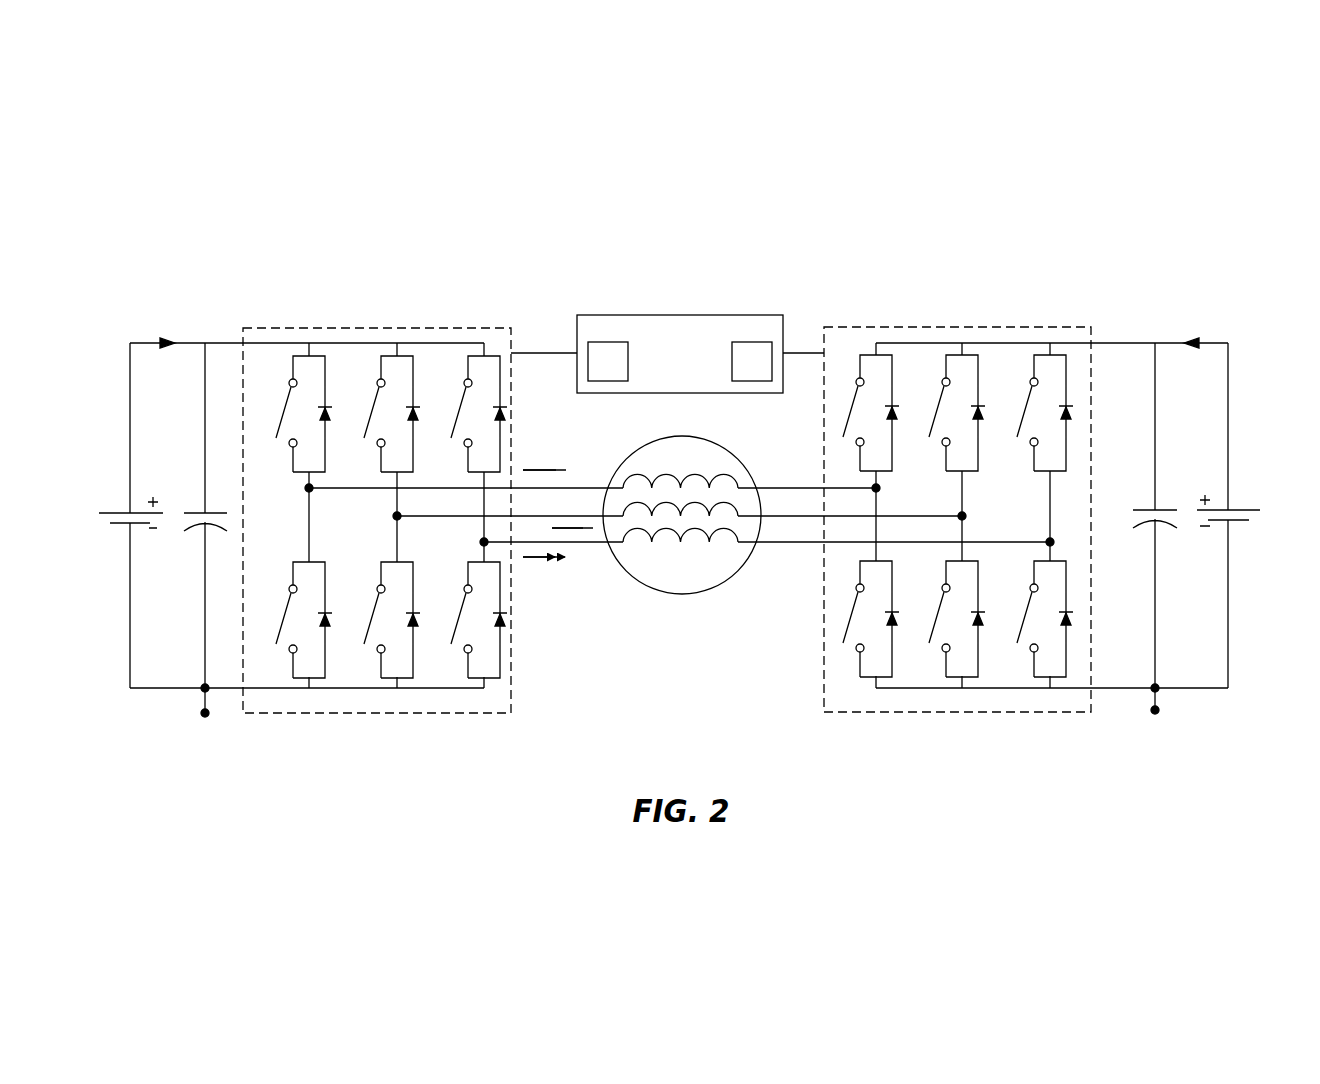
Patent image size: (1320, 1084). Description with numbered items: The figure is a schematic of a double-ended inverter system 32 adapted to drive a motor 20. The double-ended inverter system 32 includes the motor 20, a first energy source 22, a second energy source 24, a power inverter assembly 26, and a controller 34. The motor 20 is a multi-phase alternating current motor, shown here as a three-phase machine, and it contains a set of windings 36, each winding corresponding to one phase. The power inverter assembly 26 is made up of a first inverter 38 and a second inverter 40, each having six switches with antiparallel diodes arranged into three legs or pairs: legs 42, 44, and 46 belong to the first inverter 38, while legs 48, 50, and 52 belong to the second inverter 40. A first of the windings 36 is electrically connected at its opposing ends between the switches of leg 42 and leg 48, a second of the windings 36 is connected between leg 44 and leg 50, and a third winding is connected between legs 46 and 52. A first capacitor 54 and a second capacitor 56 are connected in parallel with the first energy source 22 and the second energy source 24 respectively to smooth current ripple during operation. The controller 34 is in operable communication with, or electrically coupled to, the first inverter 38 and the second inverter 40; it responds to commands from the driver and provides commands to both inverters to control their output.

The motor 20 is at (634, 453).
The first energy source 22 is at (114, 506).
The second energy source 24 is at (1245, 502).
The power inverter assembly 26 is at (389, 309).
The double-ended inverter system 32 is at (1243, 211).
The controller 34 is at (668, 344).
The windings 36 is at (694, 530).
The first inverter 38 is at (280, 327).
The second inverter 40 is at (1070, 327).
The leg 42 is at (311, 697).
The leg 44 is at (398, 697).
The leg 46 is at (486, 697).
The leg 48 is at (878, 697).
The leg 50 is at (965, 697).
The leg 52 is at (1052, 697).
The first capacitor 54 is at (195, 528).
The second capacitor 56 is at (1165, 525).